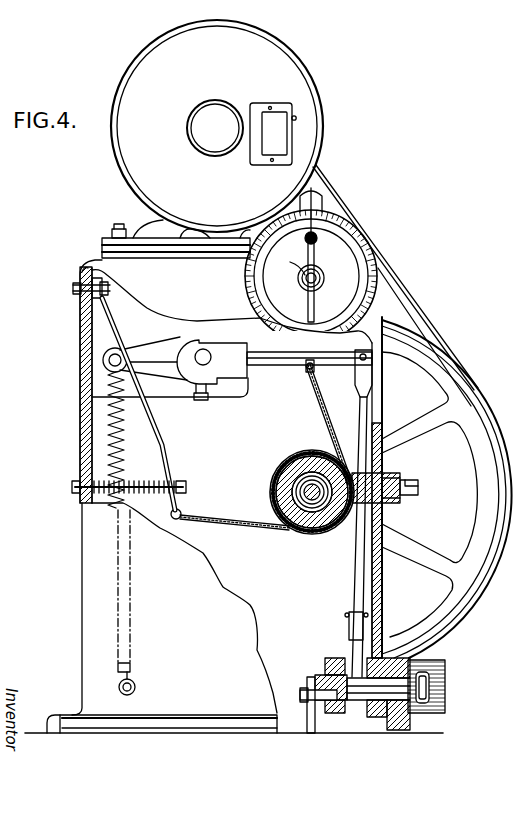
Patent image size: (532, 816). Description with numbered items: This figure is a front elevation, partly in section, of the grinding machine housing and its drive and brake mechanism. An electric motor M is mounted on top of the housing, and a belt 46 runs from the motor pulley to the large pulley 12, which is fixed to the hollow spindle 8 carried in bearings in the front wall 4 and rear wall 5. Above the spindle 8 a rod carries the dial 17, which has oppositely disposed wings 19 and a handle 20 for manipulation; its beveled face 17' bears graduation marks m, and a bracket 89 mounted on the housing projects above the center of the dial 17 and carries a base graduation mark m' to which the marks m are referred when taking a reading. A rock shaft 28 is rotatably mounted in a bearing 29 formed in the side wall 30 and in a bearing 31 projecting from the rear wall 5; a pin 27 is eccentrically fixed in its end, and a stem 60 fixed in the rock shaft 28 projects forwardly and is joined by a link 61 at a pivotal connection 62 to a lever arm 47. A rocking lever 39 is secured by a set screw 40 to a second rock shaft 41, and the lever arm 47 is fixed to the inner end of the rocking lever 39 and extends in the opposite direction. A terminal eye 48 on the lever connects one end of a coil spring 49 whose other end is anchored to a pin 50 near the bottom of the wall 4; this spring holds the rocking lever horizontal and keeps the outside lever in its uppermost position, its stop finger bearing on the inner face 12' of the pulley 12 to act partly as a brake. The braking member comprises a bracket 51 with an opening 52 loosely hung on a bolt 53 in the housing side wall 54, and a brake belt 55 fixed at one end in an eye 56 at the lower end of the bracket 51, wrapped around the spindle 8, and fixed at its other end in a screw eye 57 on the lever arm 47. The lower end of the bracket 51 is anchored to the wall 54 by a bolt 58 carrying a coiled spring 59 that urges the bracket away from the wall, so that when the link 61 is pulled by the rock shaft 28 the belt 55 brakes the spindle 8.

The electric motor M is at (226, 66).
The graduation marks m is at (290, 262).
The base graduation mark m' is at (332, 199).
The front wall 4 is at (207, 616).
The rear wall 5 is at (279, 416).
The hollow spindle 8 is at (287, 463).
The pulley 12 is at (425, 494).
The inner face of pulley 12' is at (450, 489).
The dial 17 is at (316, 276).
The beveled face of disk 17' is at (281, 276).
The wings 19 is at (307, 303).
The handle 20 is at (317, 242).
The pin 27 is at (305, 692).
The rock shaft 28 is at (384, 694).
The bearing 29 is at (410, 712).
The side wall 30 is at (382, 612).
The bearing 31 is at (337, 712).
The rocking lever 39 is at (147, 347).
The set screw 40 is at (201, 401).
The rock shaft 41 is at (206, 354).
The belt 46 is at (413, 307).
The lever arm 47 is at (283, 365).
The terminal eye 48 is at (103, 355).
The coil spring 49 is at (112, 446).
The pin 50 is at (137, 685).
The bracket 51 is at (152, 418).
The opening 52 is at (97, 296).
The bolt 53 is at (85, 266).
The housing side wall 54 is at (80, 372).
The belt 55 is at (239, 516).
The eye 56 is at (174, 526).
The screw eye 57 is at (316, 369).
The bolt 58 is at (182, 481).
The coiled spring 59 is at (136, 491).
The stem 60 is at (349, 632).
The link 61 is at (360, 551).
The pivotal connection 62 is at (366, 359).
The bracket 89 is at (312, 194).